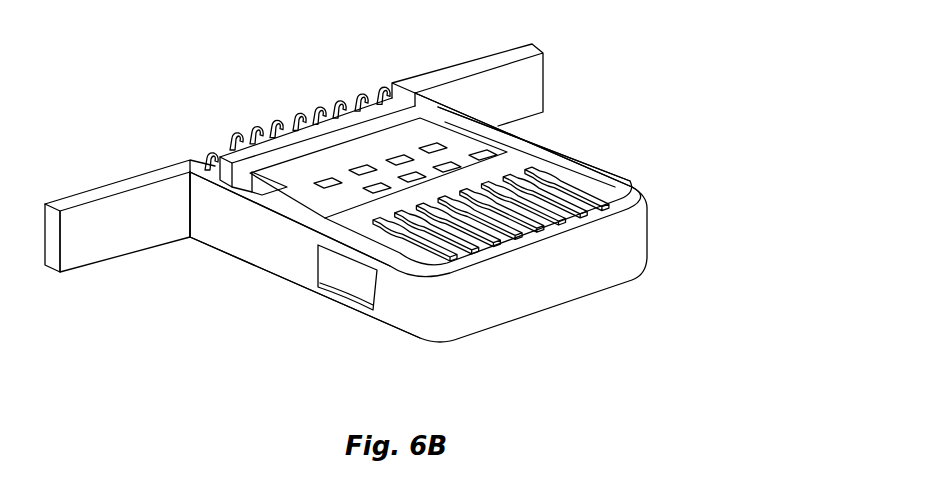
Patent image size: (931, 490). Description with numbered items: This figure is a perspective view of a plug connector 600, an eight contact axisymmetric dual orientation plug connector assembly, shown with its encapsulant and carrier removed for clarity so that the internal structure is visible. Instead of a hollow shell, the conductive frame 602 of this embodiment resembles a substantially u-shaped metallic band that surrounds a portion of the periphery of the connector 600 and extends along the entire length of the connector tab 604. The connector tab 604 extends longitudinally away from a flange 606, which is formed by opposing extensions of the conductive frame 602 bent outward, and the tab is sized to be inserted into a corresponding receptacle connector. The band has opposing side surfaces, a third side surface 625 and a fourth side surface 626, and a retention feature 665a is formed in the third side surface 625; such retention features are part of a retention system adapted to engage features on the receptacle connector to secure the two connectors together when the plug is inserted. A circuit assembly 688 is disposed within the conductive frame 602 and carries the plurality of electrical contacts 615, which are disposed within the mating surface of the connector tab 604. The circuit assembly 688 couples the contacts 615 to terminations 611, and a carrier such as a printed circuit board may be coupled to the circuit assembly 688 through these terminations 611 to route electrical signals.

The plug connector 600 is at (98, 27).
The conductive frame 602 is at (438, 300).
The connector tab 604 is at (671, 88).
The flange 606 is at (143, 207).
The terminations 611 is at (237, 137).
The electrical contacts 615 is at (592, 190).
The third side surface 625 is at (241, 242).
The fourth side surface 626 is at (560, 122).
The retention feature 665a is at (348, 280).
The circuit assembly 688 is at (356, 134).